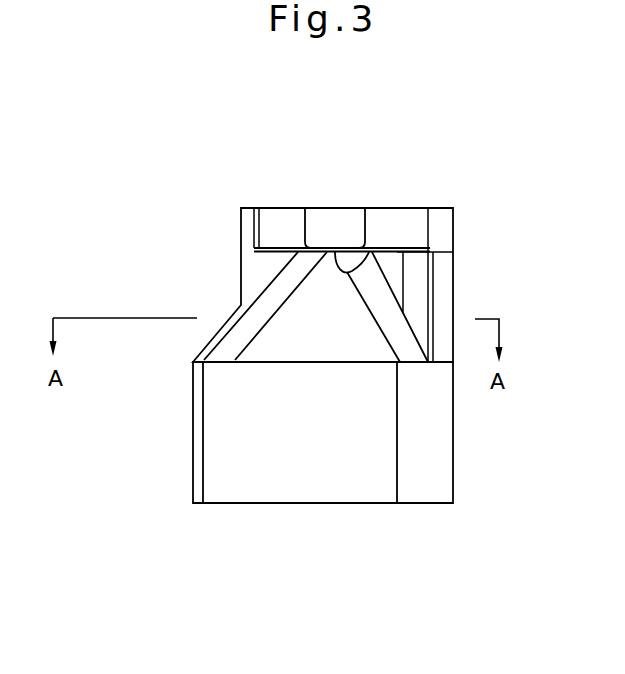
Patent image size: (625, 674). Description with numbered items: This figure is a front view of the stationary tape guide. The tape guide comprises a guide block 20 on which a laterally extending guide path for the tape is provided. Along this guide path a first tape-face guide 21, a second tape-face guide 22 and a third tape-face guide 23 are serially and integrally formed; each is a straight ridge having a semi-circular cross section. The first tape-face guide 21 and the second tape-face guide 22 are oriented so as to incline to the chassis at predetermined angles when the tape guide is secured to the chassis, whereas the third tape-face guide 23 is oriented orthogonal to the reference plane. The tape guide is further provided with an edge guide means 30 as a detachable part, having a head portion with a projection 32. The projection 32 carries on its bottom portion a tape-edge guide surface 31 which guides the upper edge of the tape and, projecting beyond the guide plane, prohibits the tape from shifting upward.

The guide block 20 is at (442, 460).
The first tape-face guide 21 is at (243, 335).
The second tape-face guide 22 is at (388, 322).
The third tape-face guide 23 is at (418, 298).
The edge guide means 30 is at (285, 217).
The tape-edge guide surface 31 is at (372, 252).
The projection 32 is at (331, 218).